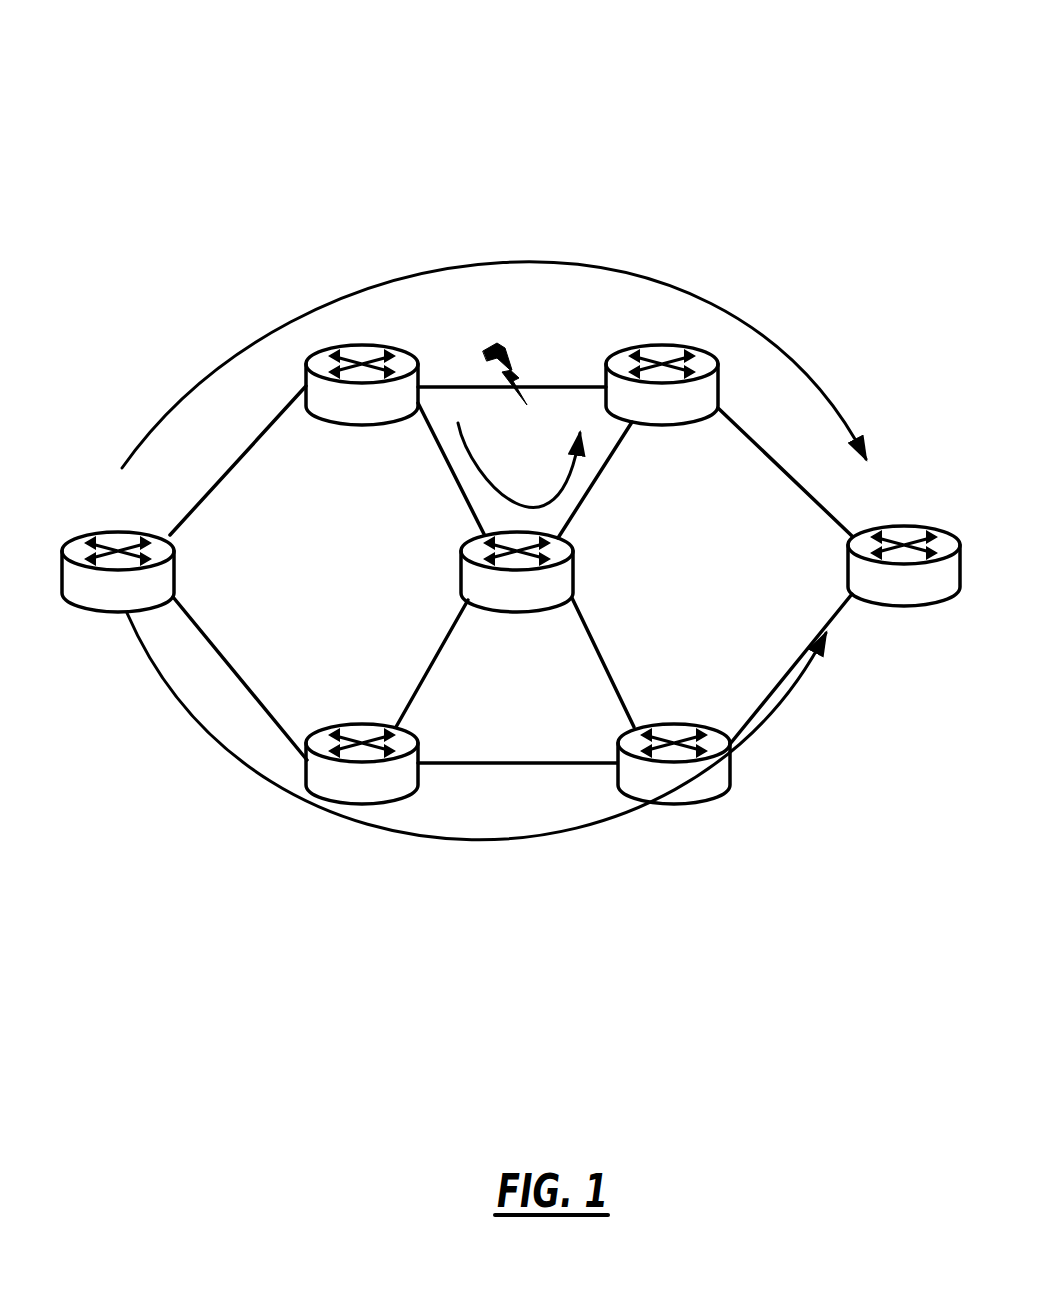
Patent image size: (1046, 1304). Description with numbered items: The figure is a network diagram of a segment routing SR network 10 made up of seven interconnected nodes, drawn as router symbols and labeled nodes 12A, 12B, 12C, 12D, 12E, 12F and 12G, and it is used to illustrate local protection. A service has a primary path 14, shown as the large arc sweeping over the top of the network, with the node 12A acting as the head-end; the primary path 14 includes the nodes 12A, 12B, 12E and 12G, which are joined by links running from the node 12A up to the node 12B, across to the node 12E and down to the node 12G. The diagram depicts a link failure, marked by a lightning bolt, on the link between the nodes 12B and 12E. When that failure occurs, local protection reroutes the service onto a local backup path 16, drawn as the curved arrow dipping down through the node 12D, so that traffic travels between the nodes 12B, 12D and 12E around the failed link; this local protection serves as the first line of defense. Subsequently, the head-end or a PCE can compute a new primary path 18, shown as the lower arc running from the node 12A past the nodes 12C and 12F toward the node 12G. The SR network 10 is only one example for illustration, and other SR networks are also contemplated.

The SR network 10 is at (525, 74).
The node 12A is at (107, 611).
The node 12B is at (352, 426).
The node 12C is at (308, 796).
The node 12D is at (523, 611).
The node 12E is at (672, 426).
The node 12F is at (630, 798).
The node 12G is at (900, 606).
The primary path 14 is at (730, 318).
The local backup path 16 is at (473, 460).
The new primary path 18 is at (457, 847).